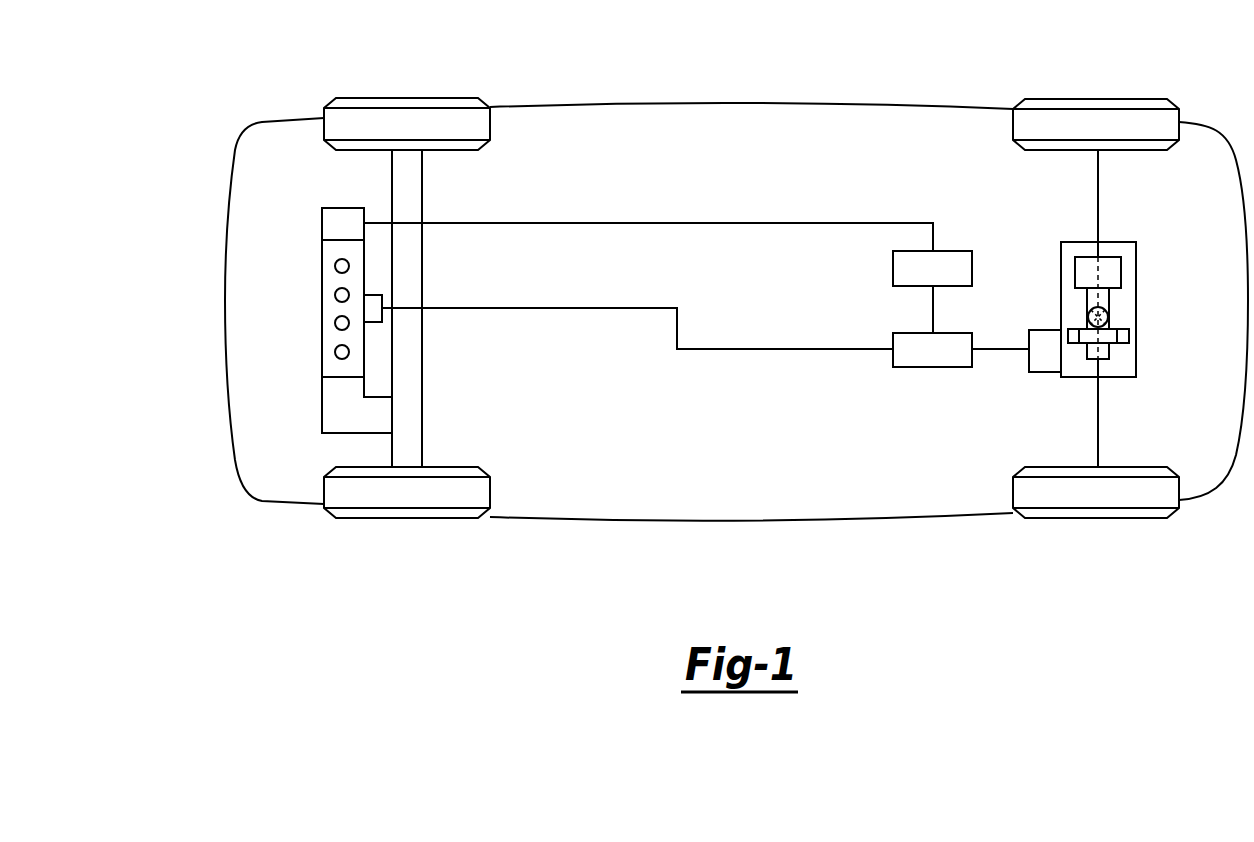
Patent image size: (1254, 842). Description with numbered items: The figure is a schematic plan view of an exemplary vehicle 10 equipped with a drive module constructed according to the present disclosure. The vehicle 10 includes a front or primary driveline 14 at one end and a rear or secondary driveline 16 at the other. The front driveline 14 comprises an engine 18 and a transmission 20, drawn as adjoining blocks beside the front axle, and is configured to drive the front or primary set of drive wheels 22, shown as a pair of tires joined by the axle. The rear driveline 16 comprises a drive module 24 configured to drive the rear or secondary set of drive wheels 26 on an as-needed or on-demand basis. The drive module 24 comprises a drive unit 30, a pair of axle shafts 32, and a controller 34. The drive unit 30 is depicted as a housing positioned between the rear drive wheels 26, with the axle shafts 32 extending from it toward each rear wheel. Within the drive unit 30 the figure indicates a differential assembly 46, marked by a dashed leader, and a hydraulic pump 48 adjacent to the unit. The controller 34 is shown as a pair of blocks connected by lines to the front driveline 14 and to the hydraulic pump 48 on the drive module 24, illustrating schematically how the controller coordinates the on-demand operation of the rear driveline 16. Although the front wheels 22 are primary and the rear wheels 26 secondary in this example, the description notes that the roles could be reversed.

The vehicle 10 is at (709, 56).
The front driveline 14 is at (287, 320).
The rear driveline 16 is at (1116, 285).
The engine 18 is at (322, 270).
The transmission 20 is at (322, 406).
The front drive wheels 22 is at (423, 98).
The drive module 24 is at (1102, 285).
The rear drive wheels 26 is at (1122, 99).
The drive unit 30 is at (1061, 300).
The axle shafts 32 is at (1098, 174).
The controller 34 is at (932, 367).
The differential assembly 46 is at (1110, 318).
The hydraulic pump 48 is at (1045, 372).